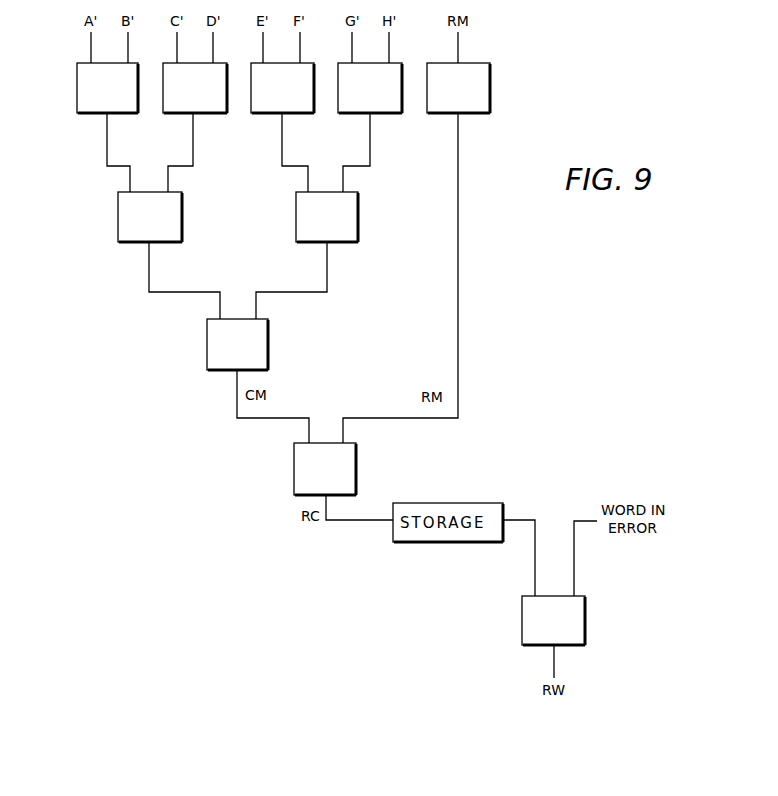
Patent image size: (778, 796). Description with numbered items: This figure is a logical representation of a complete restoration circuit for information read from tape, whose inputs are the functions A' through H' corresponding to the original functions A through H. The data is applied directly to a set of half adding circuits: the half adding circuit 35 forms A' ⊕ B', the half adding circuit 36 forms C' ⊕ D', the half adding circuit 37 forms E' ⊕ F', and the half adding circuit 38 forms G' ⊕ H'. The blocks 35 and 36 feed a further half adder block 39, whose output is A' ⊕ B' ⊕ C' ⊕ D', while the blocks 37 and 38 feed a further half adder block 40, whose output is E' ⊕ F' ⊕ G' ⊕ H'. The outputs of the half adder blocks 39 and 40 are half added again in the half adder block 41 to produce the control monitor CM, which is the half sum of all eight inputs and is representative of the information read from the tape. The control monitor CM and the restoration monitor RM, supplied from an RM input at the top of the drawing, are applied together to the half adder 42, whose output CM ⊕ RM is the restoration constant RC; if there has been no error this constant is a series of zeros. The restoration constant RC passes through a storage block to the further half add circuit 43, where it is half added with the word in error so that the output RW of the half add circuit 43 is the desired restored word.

The half adding circuit 35 is at (93, 107).
The half adding circuit 36 is at (182, 107).
The half adding circuit 37 is at (273, 107).
The half adding circuit 38 is at (362, 107).
The half adder block 39 is at (133, 235).
The half adder block 40 is at (310, 235).
The half adder block 41 is at (227, 358).
The half adder 42 is at (302, 462).
The half add circuit 43 is at (522, 612).